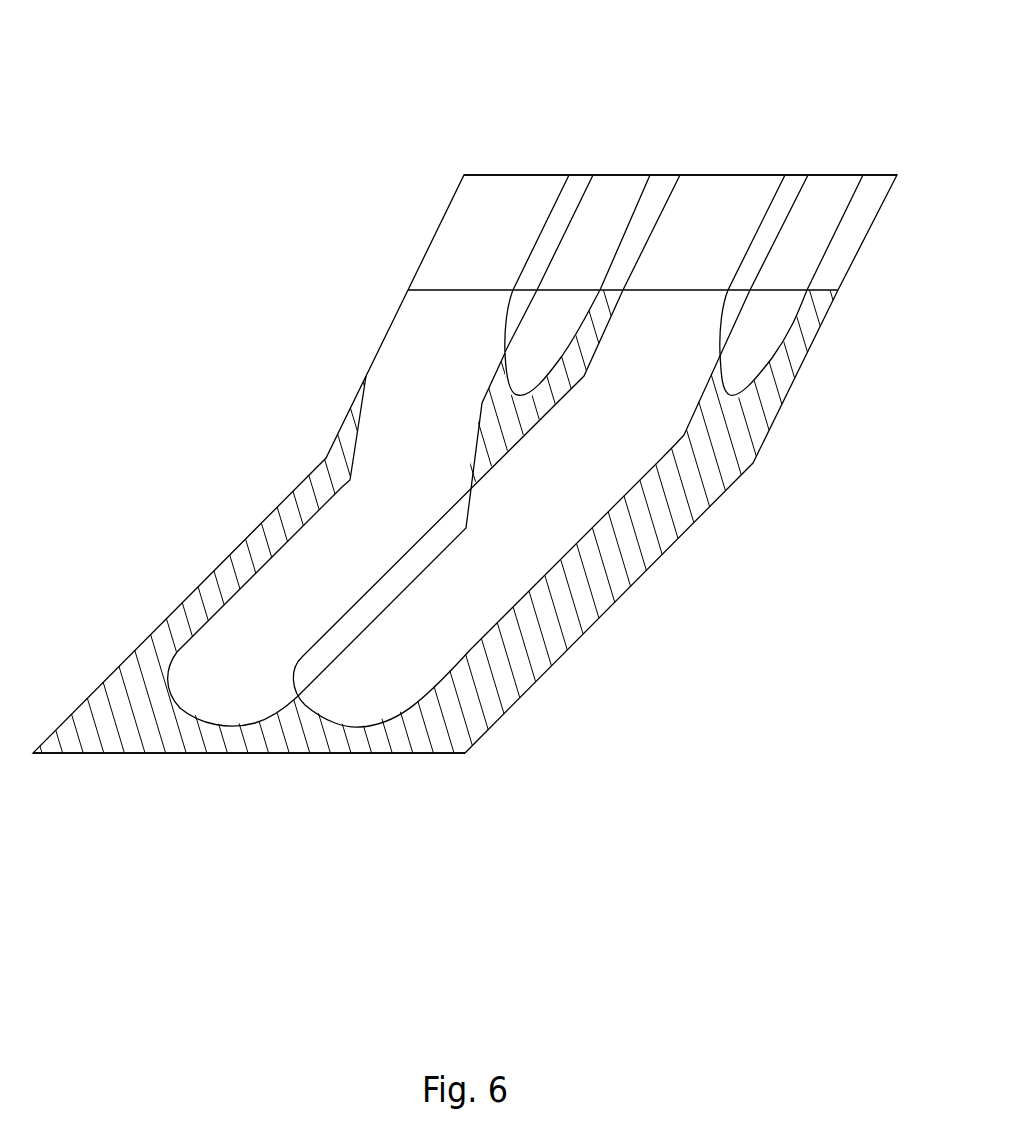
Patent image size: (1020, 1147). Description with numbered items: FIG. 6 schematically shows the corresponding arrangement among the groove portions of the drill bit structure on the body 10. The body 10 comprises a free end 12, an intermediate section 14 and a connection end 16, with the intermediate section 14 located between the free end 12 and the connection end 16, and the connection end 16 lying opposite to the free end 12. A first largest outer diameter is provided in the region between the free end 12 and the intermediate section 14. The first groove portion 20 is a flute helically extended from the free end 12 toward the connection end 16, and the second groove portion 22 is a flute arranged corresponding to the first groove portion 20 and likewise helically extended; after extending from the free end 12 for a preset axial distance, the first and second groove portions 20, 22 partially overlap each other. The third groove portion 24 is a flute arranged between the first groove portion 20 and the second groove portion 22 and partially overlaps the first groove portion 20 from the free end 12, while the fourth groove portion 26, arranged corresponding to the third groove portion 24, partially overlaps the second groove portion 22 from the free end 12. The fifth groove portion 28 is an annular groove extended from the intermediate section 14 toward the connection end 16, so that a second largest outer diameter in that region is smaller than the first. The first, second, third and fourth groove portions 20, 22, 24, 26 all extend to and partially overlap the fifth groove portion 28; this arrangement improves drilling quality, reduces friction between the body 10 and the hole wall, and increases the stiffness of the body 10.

The body 10 is at (530, 756).
The free end 12 is at (536, 174).
The intermediate section 14 is at (457, 289).
The connection end 16 is at (200, 753).
The first groove portion 20 is at (397, 423).
The second groove portion 22 is at (600, 467).
The third groove portion 24 is at (605, 215).
The fourth groove portion 26 is at (822, 195).
The fifth groove portion 28 is at (535, 643).